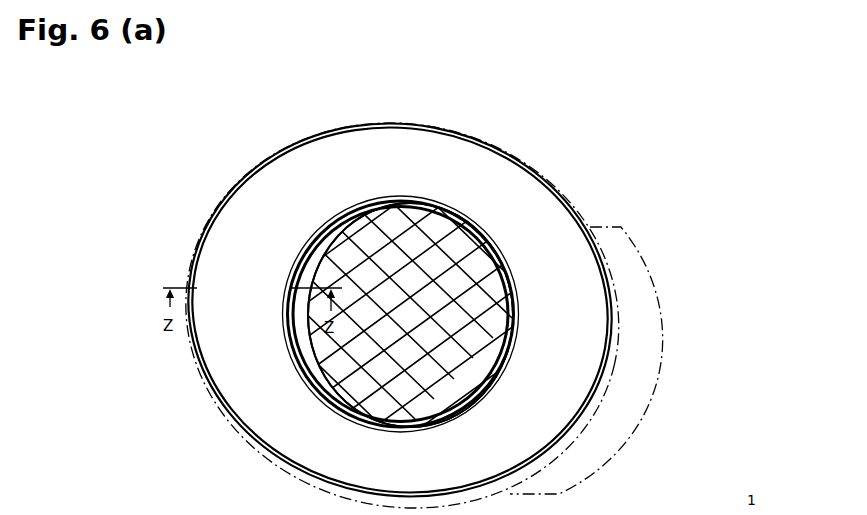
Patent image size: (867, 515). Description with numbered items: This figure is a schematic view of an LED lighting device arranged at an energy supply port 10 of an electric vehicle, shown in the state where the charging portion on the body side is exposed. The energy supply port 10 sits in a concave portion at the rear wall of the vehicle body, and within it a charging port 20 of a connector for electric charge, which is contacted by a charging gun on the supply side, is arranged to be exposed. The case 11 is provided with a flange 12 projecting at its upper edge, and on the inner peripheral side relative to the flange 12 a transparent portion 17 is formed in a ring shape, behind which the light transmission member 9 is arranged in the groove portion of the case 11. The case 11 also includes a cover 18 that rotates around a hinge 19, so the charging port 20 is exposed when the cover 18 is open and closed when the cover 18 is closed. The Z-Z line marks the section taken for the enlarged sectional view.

The energy supply port 10 is at (270, 146).
The flange 12 is at (240, 198).
The case 11 is at (318, 258).
The charging port 20 is at (458, 250).
The transparent portion 17 is at (312, 390).
The light transmission member 9 is at (312, 390).
The cover 18 is at (218, 408).
The hinge 19 is at (626, 360).